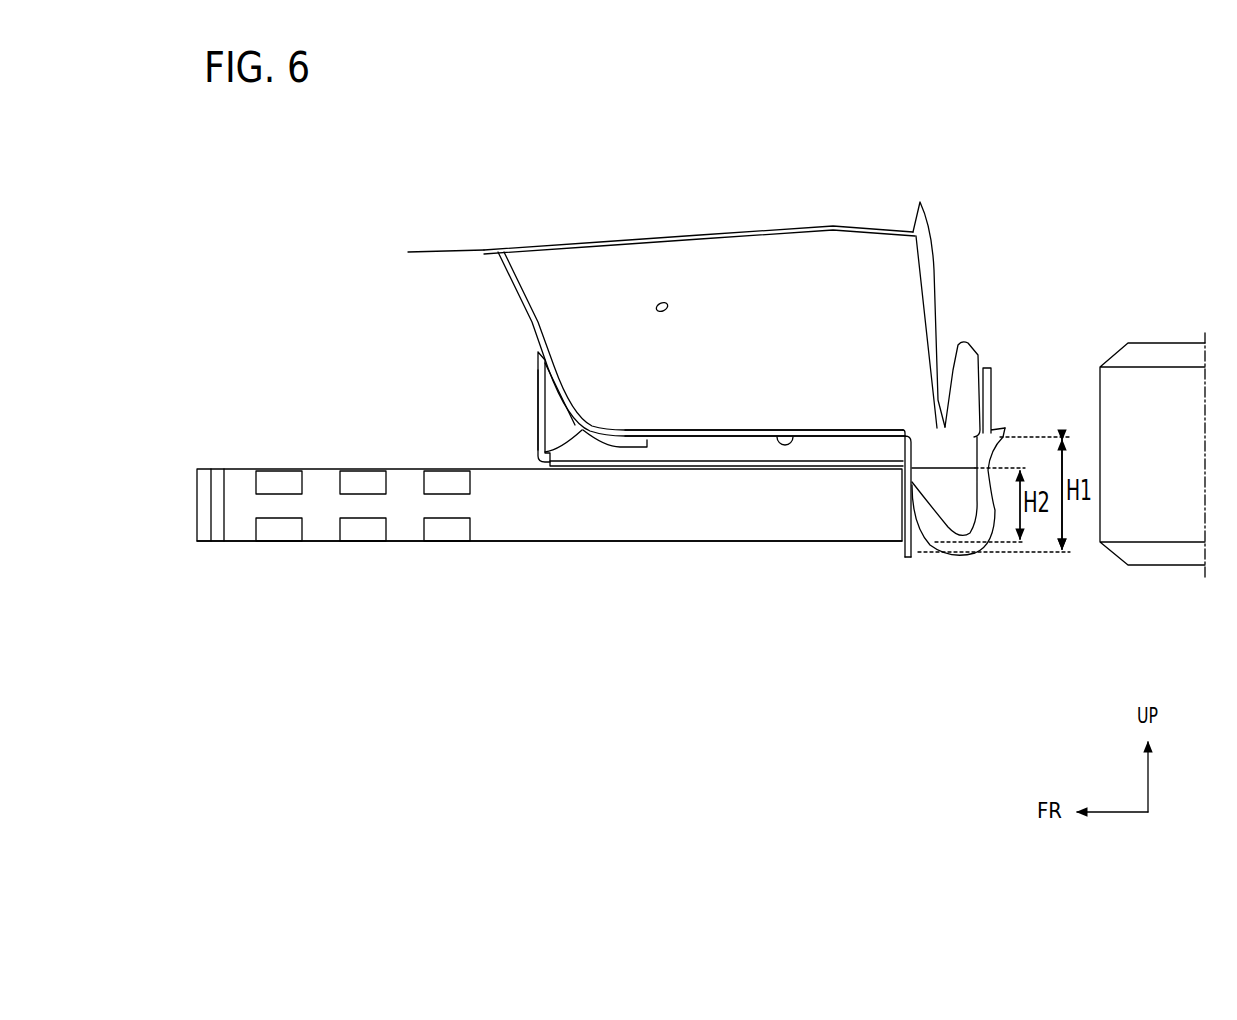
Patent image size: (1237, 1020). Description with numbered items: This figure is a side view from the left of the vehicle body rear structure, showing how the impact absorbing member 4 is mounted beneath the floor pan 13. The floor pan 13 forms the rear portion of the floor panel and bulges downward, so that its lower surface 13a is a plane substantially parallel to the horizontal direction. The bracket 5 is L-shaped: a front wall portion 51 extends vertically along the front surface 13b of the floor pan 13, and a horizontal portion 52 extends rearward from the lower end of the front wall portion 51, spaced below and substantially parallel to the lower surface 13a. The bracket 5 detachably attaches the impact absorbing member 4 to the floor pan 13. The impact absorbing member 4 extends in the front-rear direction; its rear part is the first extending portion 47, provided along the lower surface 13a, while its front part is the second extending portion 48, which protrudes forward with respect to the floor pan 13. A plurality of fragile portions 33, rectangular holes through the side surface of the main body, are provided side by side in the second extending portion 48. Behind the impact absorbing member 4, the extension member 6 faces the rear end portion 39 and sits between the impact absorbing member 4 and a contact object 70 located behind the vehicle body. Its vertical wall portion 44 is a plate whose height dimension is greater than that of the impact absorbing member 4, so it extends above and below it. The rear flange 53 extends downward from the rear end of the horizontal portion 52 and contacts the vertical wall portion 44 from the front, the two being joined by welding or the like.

The impact absorbing member 4 is at (548, 565).
The bracket 5 is at (524, 390).
The extension member 6 is at (910, 574).
The floor pan 13 is at (698, 258).
The lower surface 13a is at (800, 432).
The front surface 13b is at (517, 302).
The fragile portions 33 is at (383, 527).
The rear end portion 39 is at (950, 515).
The vertical wall portion 44 is at (918, 537).
The first extending portion 47 is at (667, 543).
The second extending portion 48 is at (237, 545).
The front wall portion 51 is at (538, 424).
The horizontal portion 52 is at (713, 468).
The rear flange 53 is at (906, 472).
The contact object 70 is at (1100, 393).